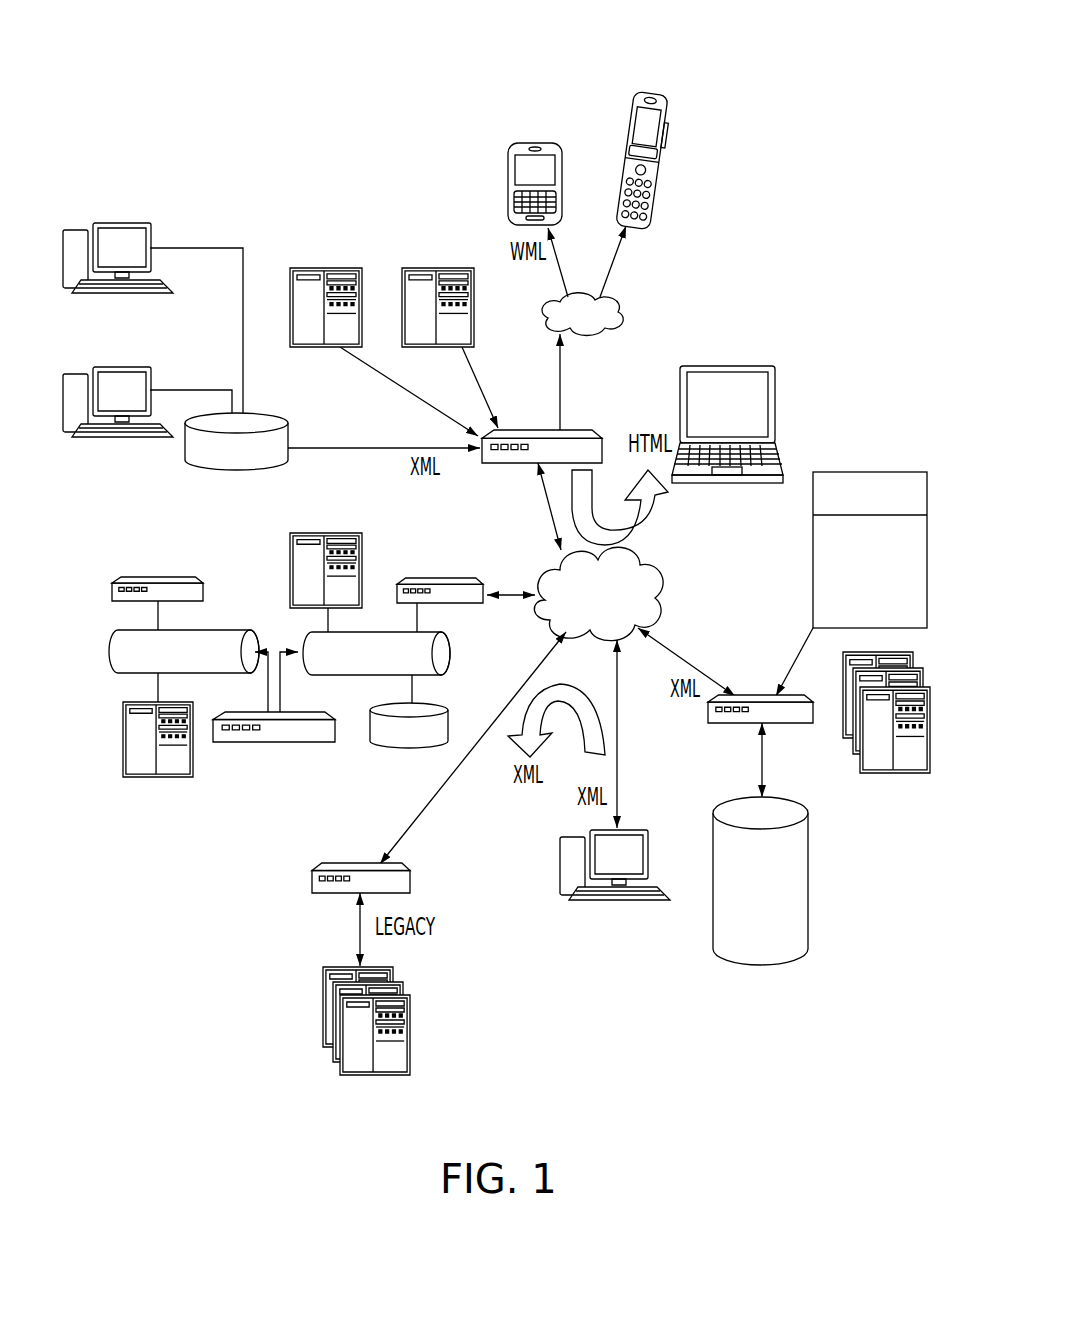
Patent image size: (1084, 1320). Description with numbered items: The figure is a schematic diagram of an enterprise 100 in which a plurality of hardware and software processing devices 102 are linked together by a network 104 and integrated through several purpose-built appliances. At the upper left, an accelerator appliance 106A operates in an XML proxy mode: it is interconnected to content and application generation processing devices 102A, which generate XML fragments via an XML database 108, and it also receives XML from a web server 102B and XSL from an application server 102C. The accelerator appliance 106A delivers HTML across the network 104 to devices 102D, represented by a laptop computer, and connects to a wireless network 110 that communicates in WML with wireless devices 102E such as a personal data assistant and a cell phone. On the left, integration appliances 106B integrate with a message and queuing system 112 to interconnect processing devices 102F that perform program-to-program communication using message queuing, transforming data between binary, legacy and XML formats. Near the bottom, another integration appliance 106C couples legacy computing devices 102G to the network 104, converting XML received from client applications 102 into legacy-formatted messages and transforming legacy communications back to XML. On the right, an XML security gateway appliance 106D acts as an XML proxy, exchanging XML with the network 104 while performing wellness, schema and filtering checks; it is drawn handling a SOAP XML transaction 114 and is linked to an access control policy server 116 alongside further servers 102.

The enterprise 100 is at (833, 253).
The processing devices 102 is at (563, 860).
The content and application generation processing devices 102A is at (118, 223).
The web server 102B is at (320, 268).
The application server 102C is at (433, 268).
The devices across the network 102D is at (751, 366).
The wireless devices 102E is at (528, 143).
The processing devices using message queuing 102F is at (290, 565).
The legacy computing devices 102G is at (322, 1055).
The network 104 is at (660, 568).
The accelerator appliance 106A is at (515, 463).
The integration appliances 106B is at (142, 577).
The integration appliance 106C is at (312, 880).
The XML security gateway appliance 106D is at (762, 697).
The XML database 108 is at (185, 455).
The wireless network 110 is at (607, 322).
The message and queuing (MQ) system 112 is at (98, 651).
The SOAP XML transaction 114 is at (862, 472).
The access control policy server 116 is at (760, 966).